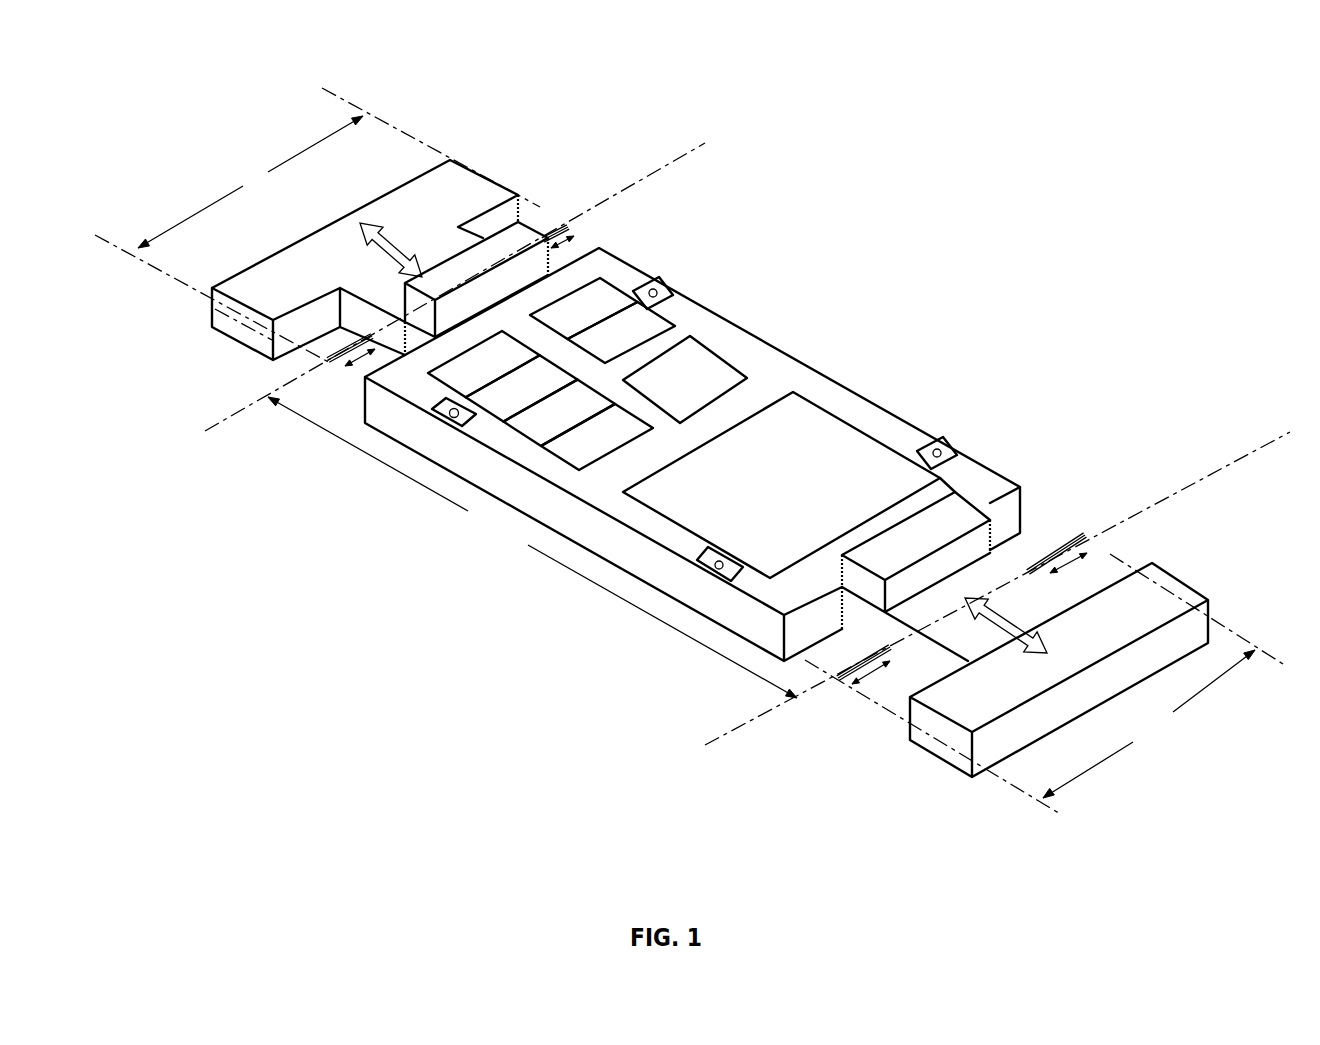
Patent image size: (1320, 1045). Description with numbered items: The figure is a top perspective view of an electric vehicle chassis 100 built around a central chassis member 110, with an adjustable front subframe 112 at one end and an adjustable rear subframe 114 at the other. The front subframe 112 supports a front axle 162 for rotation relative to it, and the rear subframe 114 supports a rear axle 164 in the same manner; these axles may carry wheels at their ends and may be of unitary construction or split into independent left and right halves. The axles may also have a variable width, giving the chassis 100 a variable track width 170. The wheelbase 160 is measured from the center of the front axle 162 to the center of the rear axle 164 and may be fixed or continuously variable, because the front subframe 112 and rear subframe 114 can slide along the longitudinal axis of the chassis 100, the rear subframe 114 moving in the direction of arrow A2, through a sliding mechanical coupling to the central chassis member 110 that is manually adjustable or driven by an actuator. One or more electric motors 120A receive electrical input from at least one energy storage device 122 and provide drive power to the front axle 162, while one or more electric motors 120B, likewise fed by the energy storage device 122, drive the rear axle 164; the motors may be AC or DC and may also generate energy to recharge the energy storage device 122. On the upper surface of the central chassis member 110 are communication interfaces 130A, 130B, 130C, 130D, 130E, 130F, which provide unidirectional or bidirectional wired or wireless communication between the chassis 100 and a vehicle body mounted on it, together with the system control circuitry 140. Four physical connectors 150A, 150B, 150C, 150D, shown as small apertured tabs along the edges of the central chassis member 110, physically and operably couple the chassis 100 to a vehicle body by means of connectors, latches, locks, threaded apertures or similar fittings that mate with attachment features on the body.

The electric vehicle chassis 100 is at (1232, 60).
The central chassis member 110 is at (795, 356).
The adjustable front subframe 112 is at (450, 160).
The adjustable rear subframe 114 is at (1168, 573).
The electric motor 120A is at (546, 232).
The electric motor 120B is at (992, 520).
The energy storage device 122 is at (781, 485).
The communication interface 130A is at (484, 364).
The communication interface 130B is at (522, 388).
The communication interface 130C is at (559, 413).
The communication interface 130D is at (597, 437).
The communication interface 130E is at (584, 308).
The communication interface 130F is at (622, 332).
The system control circuitry 140 is at (685, 379).
The physical connector 150A is at (432, 409).
The physical connector 150B is at (662, 263).
The physical connector 150C is at (965, 418).
The physical connector 150D is at (697, 562).
The wheelbase 160 is at (532, 547).
The front axle 162 is at (330, 356).
The rear axle 164 is at (1088, 538).
The track width 170 is at (696, 457).
The arrow A2 is at (392, 250).